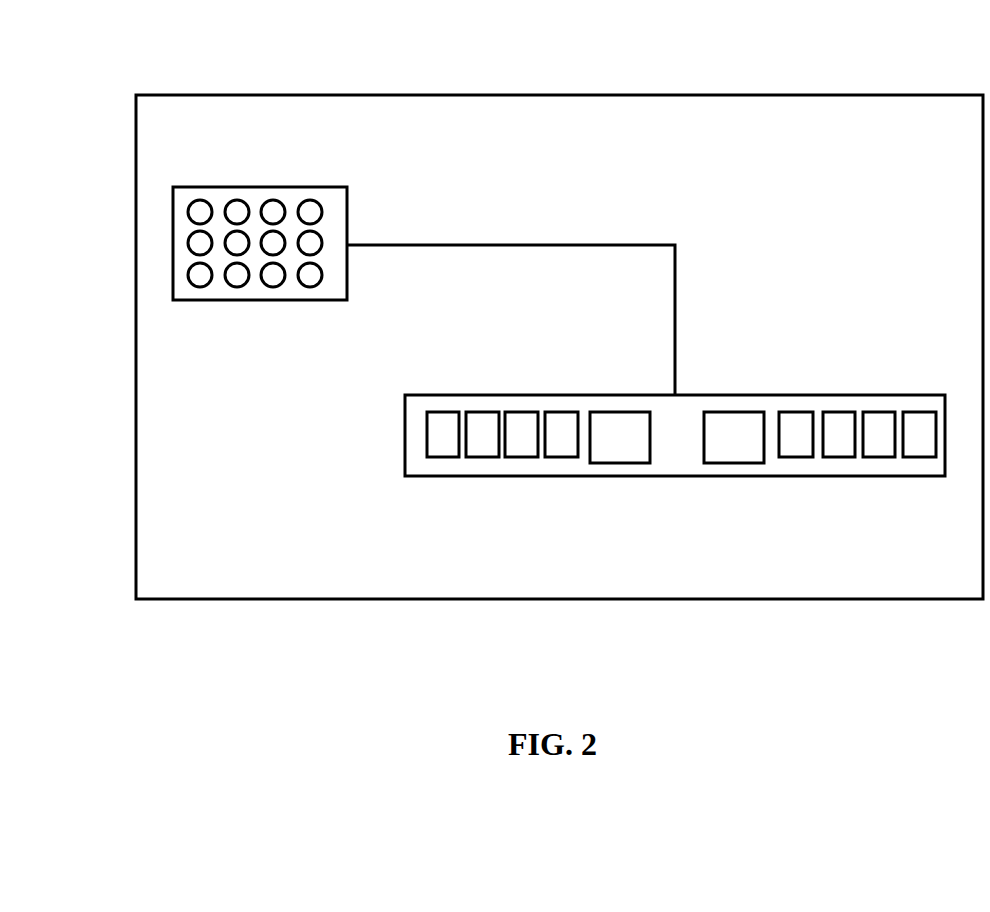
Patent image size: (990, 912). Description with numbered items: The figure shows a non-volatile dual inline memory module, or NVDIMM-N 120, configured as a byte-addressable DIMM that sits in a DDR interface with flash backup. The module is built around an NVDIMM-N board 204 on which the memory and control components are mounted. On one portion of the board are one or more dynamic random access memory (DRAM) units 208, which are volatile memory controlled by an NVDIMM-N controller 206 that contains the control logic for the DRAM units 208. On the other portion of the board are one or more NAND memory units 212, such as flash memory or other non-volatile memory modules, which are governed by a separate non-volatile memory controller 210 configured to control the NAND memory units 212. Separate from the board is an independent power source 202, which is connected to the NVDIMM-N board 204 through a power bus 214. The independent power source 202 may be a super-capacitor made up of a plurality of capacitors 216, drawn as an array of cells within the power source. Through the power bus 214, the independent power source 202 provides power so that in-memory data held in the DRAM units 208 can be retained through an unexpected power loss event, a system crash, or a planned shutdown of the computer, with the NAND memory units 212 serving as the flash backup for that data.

The non-volatile dual inline memory module (NVDIMM-N) 120 is at (835, 91).
The independent power source 202 is at (327, 181).
The NVDIMM-N board 204 is at (403, 435).
The NVDIMM-N controller 206 is at (616, 466).
The dynamic random access memory (DRAM) units 208 is at (587, 412).
The non-volatile memory controller 210 is at (731, 466).
The NAND memory units 212 is at (777, 408).
The power bus 214 is at (464, 243).
The capacitors 216 is at (210, 198).